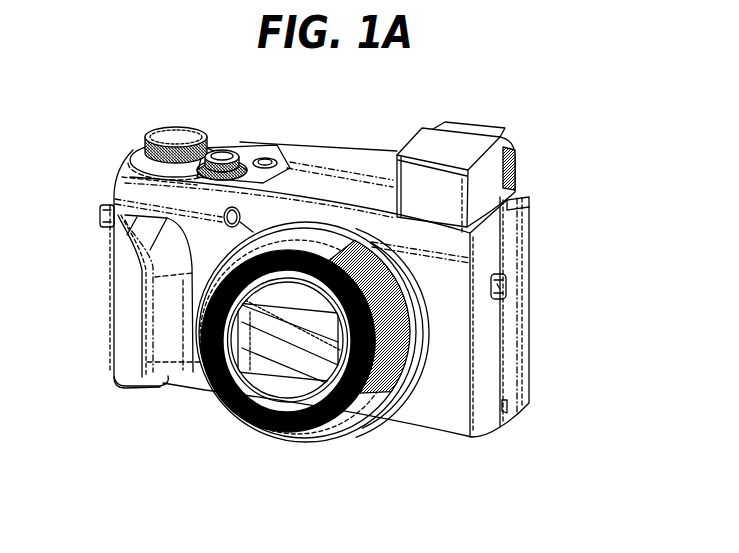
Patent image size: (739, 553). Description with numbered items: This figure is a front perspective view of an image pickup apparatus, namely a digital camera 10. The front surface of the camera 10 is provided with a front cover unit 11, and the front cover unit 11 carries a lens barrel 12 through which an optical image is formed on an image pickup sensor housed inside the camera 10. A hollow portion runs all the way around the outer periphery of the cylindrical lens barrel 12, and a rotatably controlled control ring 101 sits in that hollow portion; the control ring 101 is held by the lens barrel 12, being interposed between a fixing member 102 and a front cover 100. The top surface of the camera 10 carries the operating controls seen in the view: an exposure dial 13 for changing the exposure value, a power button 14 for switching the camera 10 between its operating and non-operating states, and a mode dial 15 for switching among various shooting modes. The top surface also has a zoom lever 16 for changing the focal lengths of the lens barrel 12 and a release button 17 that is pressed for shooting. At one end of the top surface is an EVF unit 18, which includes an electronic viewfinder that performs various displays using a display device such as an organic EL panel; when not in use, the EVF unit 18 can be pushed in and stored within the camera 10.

The camera 10 is at (540, 292).
The front cover unit 11 is at (114, 273).
The lens barrel 12 is at (277, 385).
The exposure dial 13 is at (138, 150).
The power button 14 is at (266, 160).
The mode dial 15 is at (176, 130).
The zoom lever 16 is at (187, 167).
The release button 17 is at (222, 152).
The EVF unit 18 is at (455, 148).
The front cover 100 is at (175, 335).
The control ring 101 is at (402, 352).
The fixing member 102 is at (328, 415).